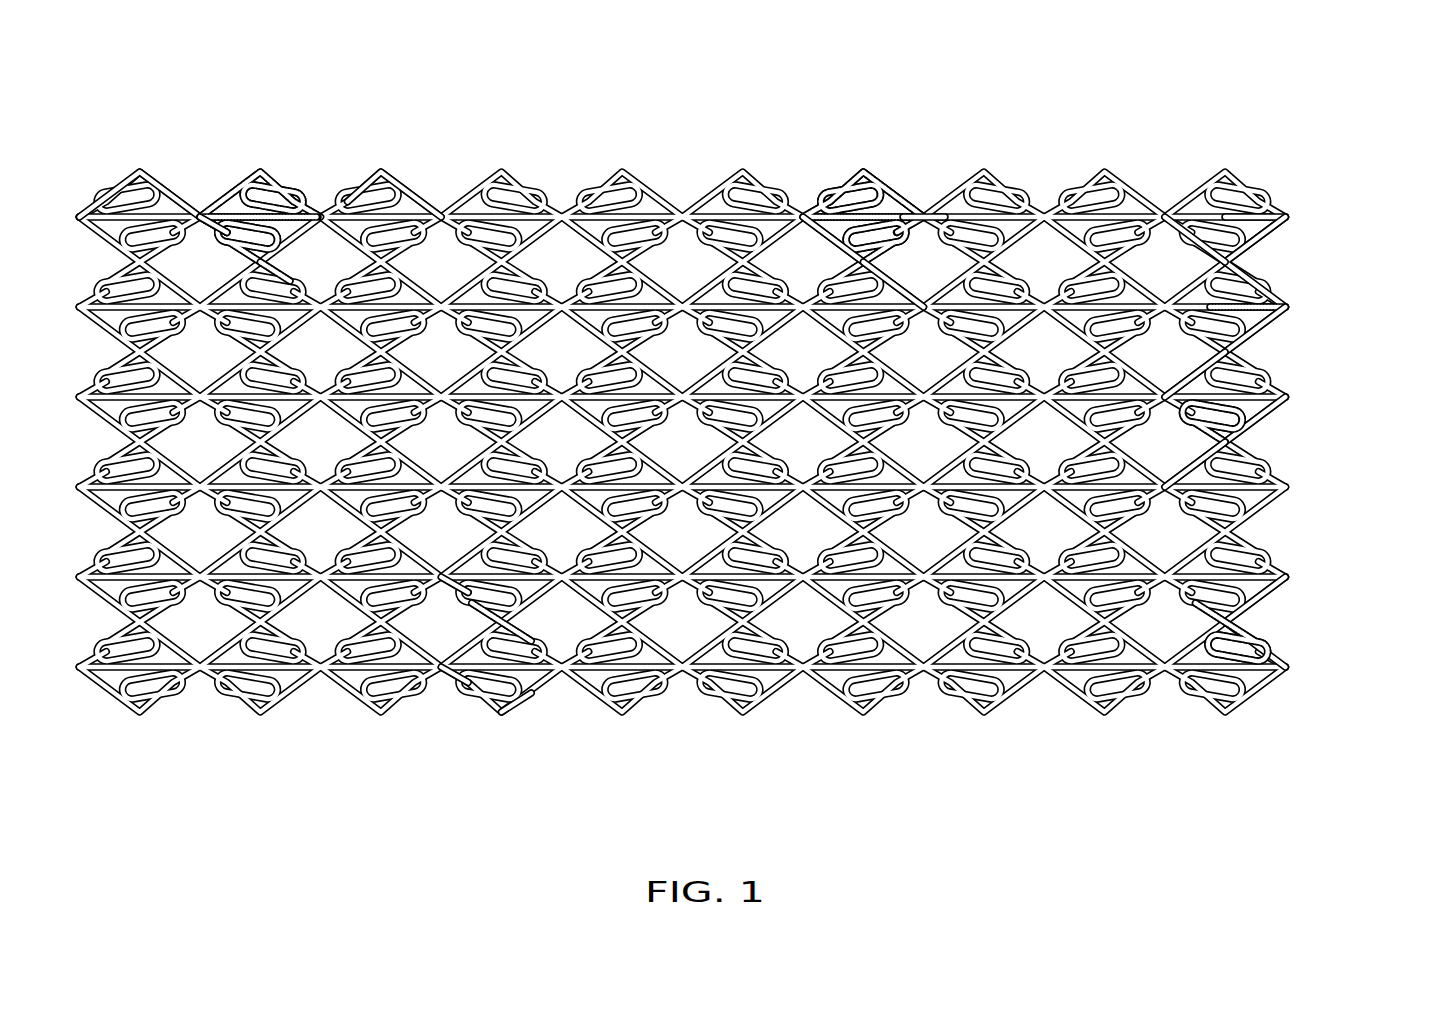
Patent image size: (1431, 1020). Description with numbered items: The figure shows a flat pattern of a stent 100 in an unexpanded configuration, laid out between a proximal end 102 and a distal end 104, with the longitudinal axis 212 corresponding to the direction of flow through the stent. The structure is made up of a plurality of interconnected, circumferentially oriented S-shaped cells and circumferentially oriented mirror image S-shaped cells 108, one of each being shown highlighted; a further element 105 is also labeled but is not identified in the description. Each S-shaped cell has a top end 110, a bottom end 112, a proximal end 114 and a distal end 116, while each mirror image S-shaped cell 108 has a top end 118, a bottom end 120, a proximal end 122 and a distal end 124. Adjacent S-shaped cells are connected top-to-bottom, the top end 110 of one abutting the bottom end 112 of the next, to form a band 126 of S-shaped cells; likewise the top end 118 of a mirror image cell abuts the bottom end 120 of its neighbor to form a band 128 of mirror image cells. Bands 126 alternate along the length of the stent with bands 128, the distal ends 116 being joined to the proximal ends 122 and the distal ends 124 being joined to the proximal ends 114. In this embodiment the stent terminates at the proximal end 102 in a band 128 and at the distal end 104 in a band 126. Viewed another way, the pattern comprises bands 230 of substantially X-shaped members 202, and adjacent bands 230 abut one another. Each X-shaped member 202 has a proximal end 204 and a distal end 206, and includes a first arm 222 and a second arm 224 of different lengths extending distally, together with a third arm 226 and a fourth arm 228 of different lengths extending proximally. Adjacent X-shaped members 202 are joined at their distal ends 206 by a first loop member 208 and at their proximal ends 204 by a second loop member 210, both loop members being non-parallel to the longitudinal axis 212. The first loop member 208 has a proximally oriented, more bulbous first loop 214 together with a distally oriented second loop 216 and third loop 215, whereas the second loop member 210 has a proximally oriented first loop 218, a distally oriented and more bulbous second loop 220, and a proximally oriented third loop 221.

The stent 100 is at (428, 148).
The proximal end 102 is at (122, 190).
The distal end 104 is at (1292, 214).
The strut 105 is at (222, 198).
The mirror image S-shaped cell 108 is at (370, 184).
The top end 110 is at (258, 178).
The bottom end 112 is at (282, 267).
The proximal end 114 is at (212, 243).
The distal end 116 is at (322, 213).
The top end 118 is at (847, 183).
The bottom end 120 is at (890, 257).
The proximal end 122 is at (808, 207).
The distal end 124 is at (926, 211).
The band of S-shaped cells 126 is at (330, 740).
The band of mirror image S-shaped cells 128 is at (200, 740).
The X-shaped member 202 is at (1276, 607).
The proximal end 204 is at (1258, 597).
The distal end 206 is at (1262, 634).
The first loop member 208 is at (1290, 301).
The second loop member 210 is at (1268, 391).
The longitudinal axis 212 is at (1419, 456).
The first loop 214 is at (1215, 290).
The third loop 215 is at (1291, 311).
The second loop 216 is at (1286, 269).
The first loop 218 is at (1212, 424).
The second loop 220 is at (1266, 419).
The third loop 221 is at (1212, 384).
The first arm 222 is at (564, 689).
The second arm 224 is at (536, 664).
The third arm 226 is at (470, 630).
The fourth arm 228 is at (473, 696).
The band of X-shaped members 230 is at (570, 765).